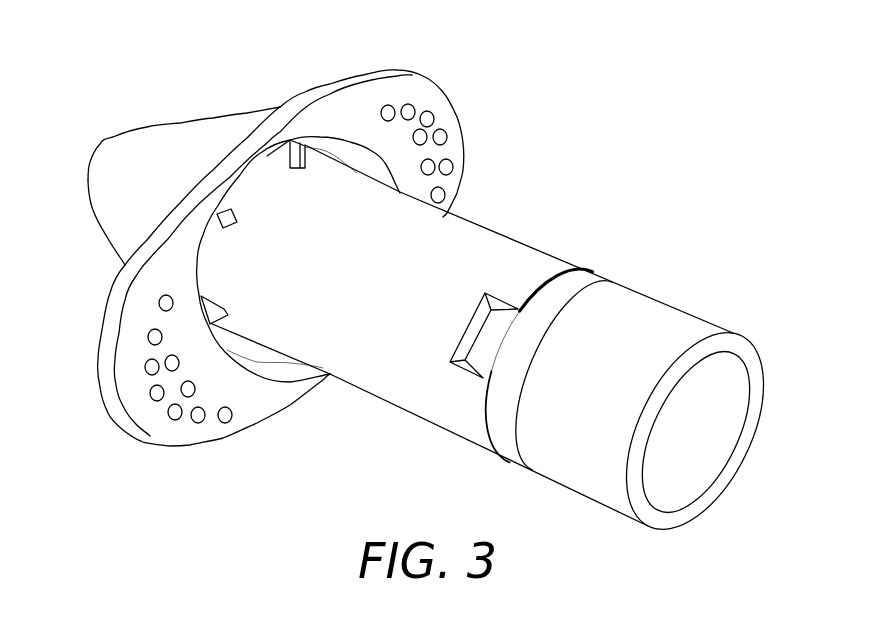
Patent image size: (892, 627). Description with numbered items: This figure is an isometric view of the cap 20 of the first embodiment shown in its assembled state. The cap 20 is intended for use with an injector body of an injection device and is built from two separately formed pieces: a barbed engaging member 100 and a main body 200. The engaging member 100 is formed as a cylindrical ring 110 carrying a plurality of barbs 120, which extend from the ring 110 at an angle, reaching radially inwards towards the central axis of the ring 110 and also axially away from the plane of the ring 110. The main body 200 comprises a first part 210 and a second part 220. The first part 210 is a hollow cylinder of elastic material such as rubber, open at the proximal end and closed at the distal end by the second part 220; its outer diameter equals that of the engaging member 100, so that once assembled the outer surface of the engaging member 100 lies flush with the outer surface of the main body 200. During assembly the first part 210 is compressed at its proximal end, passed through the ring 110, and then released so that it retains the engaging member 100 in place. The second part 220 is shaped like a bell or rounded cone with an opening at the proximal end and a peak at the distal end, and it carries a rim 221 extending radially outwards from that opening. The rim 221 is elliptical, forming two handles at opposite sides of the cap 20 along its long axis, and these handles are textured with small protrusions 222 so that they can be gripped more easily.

The cap 20 is at (606, 86).
The engaging member 100 is at (541, 318).
The cylindrical ring 110 is at (588, 287).
The barbs 120 is at (487, 335).
The main body 200 is at (440, 289).
The first part 210 is at (366, 392).
The second part 220 is at (291, 242).
The rim 221 is at (420, 78).
The small protrusions 222 is at (427, 118).